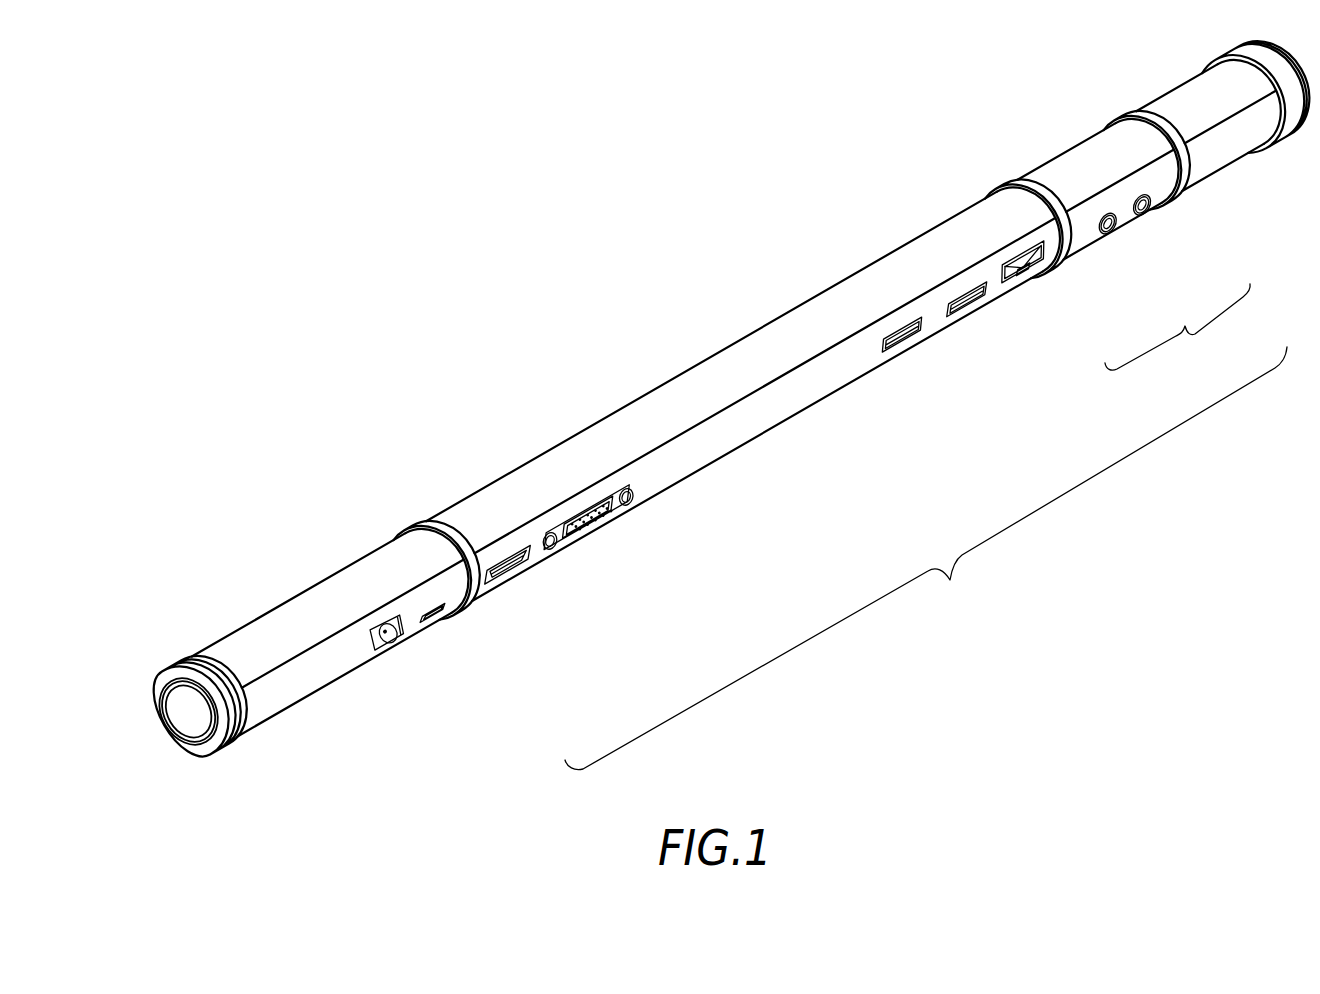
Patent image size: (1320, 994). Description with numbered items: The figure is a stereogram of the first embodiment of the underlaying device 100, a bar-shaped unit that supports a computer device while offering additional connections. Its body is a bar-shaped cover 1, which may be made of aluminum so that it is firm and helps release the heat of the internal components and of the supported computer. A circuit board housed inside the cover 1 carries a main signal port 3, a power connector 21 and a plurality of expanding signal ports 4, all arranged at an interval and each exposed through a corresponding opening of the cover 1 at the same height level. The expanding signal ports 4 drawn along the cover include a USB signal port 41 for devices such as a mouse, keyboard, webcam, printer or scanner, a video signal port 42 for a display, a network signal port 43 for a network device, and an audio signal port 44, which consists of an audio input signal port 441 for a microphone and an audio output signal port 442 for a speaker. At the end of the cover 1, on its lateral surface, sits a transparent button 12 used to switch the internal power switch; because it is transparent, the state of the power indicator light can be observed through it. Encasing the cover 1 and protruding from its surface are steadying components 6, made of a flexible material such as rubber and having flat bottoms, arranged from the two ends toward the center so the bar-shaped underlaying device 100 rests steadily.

The underlaying device 100 is at (718, 407).
The bar-shaped cover 1 is at (777, 342).
The steadying component 6 is at (294, 598).
The button 12 is at (192, 720).
The power connector 21 is at (386, 650).
The main signal port 3 is at (438, 621).
The USB signal port 41 is at (508, 575).
The video signal port 42 is at (610, 525).
The network signal port 43 is at (1036, 274).
The expanding signal ports 4 is at (926, 558).
The audio signal port 44 is at (1177, 329).
The audio input signal port 441 is at (1142, 213).
The audio output signal port 442 is at (1113, 235).